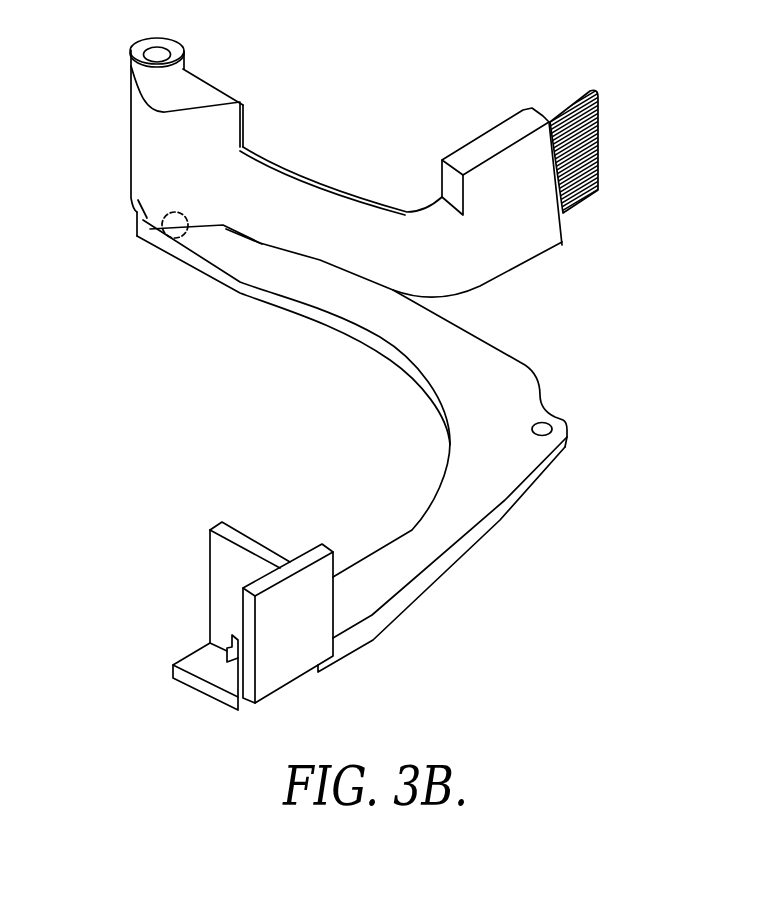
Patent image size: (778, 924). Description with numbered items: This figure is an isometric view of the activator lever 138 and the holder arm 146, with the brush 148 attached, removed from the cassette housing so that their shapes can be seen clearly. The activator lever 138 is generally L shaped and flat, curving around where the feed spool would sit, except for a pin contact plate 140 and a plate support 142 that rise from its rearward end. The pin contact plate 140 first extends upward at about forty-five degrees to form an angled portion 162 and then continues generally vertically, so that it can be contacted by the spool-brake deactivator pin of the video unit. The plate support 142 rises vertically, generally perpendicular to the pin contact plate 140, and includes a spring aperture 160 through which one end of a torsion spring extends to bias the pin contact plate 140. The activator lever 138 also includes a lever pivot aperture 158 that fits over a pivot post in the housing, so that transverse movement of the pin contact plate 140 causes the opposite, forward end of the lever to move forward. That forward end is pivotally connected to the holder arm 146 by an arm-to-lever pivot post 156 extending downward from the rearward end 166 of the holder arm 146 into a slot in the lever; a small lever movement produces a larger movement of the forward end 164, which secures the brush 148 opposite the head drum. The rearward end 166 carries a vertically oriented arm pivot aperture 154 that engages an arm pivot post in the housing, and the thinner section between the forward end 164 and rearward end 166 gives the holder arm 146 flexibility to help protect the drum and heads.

The activator lever 138 is at (477, 473).
The pin contact plate 140 is at (288, 633).
The plate support 142 is at (222, 587).
The holder arm 146 is at (333, 223).
The brush 148 is at (583, 128).
The arm pivot aperture 154 is at (165, 53).
The arm-to-lever pivot post 156 is at (176, 222).
The lever pivot aperture 158 is at (547, 413).
The spring aperture 160 is at (232, 647).
The angled portion 162 is at (238, 702).
The forward end 164 is at (521, 217).
The rearward end 166 is at (140, 158).